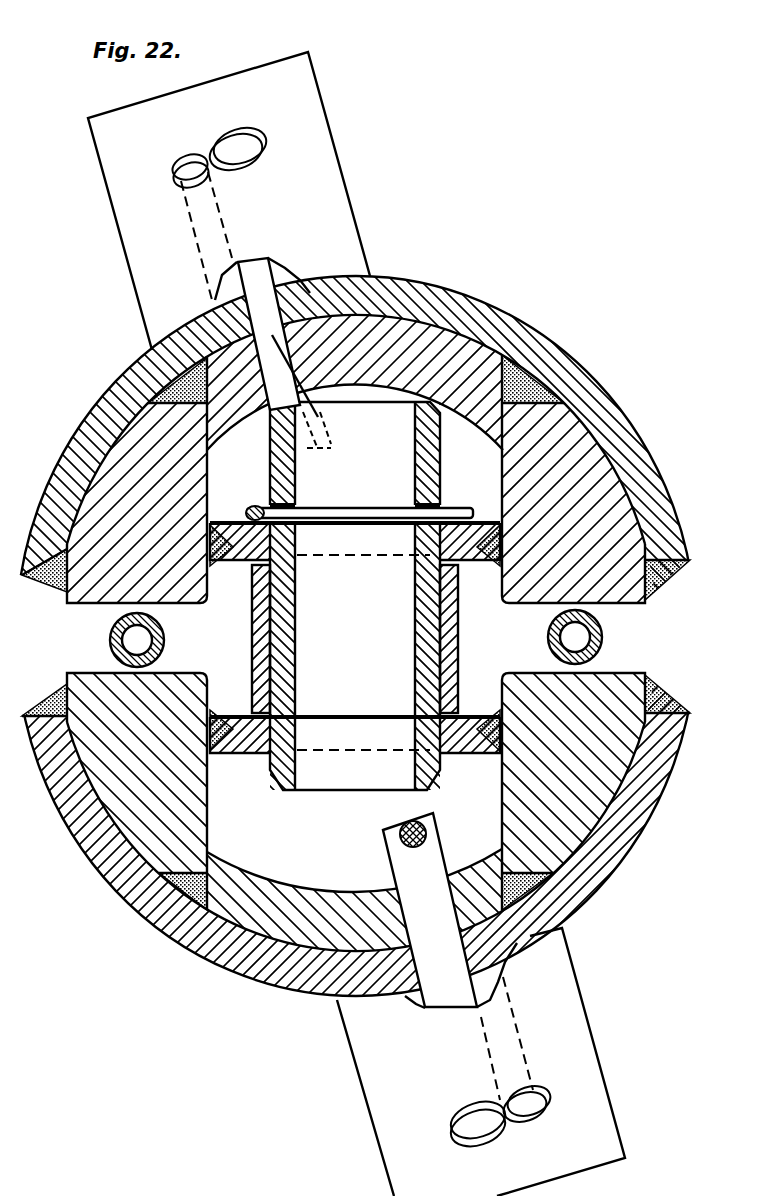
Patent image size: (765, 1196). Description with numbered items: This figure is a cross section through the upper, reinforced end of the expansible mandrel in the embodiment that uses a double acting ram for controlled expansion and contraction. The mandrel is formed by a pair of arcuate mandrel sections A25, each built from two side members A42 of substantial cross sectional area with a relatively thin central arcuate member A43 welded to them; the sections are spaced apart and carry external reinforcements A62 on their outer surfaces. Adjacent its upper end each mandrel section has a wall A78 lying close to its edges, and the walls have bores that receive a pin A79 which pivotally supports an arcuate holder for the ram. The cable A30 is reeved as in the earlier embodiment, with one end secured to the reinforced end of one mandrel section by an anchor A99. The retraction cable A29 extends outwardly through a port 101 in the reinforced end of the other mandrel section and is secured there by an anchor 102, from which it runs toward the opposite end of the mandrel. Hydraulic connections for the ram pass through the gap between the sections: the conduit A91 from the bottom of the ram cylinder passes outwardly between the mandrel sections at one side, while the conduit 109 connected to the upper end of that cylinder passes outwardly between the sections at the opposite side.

The anchor A99 is at (146, 275).
The anchor 102 is at (580, 1020).
The mandrel section A25 is at (490, 350).
The external reinforcement A62 is at (585, 378).
The central arcuate member A43 is at (440, 340).
The side member A42 is at (526, 683).
The cable A30 is at (302, 455).
The pin A79 is at (327, 773).
The wall A78 is at (480, 516).
The conduit 109 is at (108, 638).
The conduit A91 is at (602, 636).
The port 101 is at (447, 956).
The retraction cable A29 is at (408, 822).